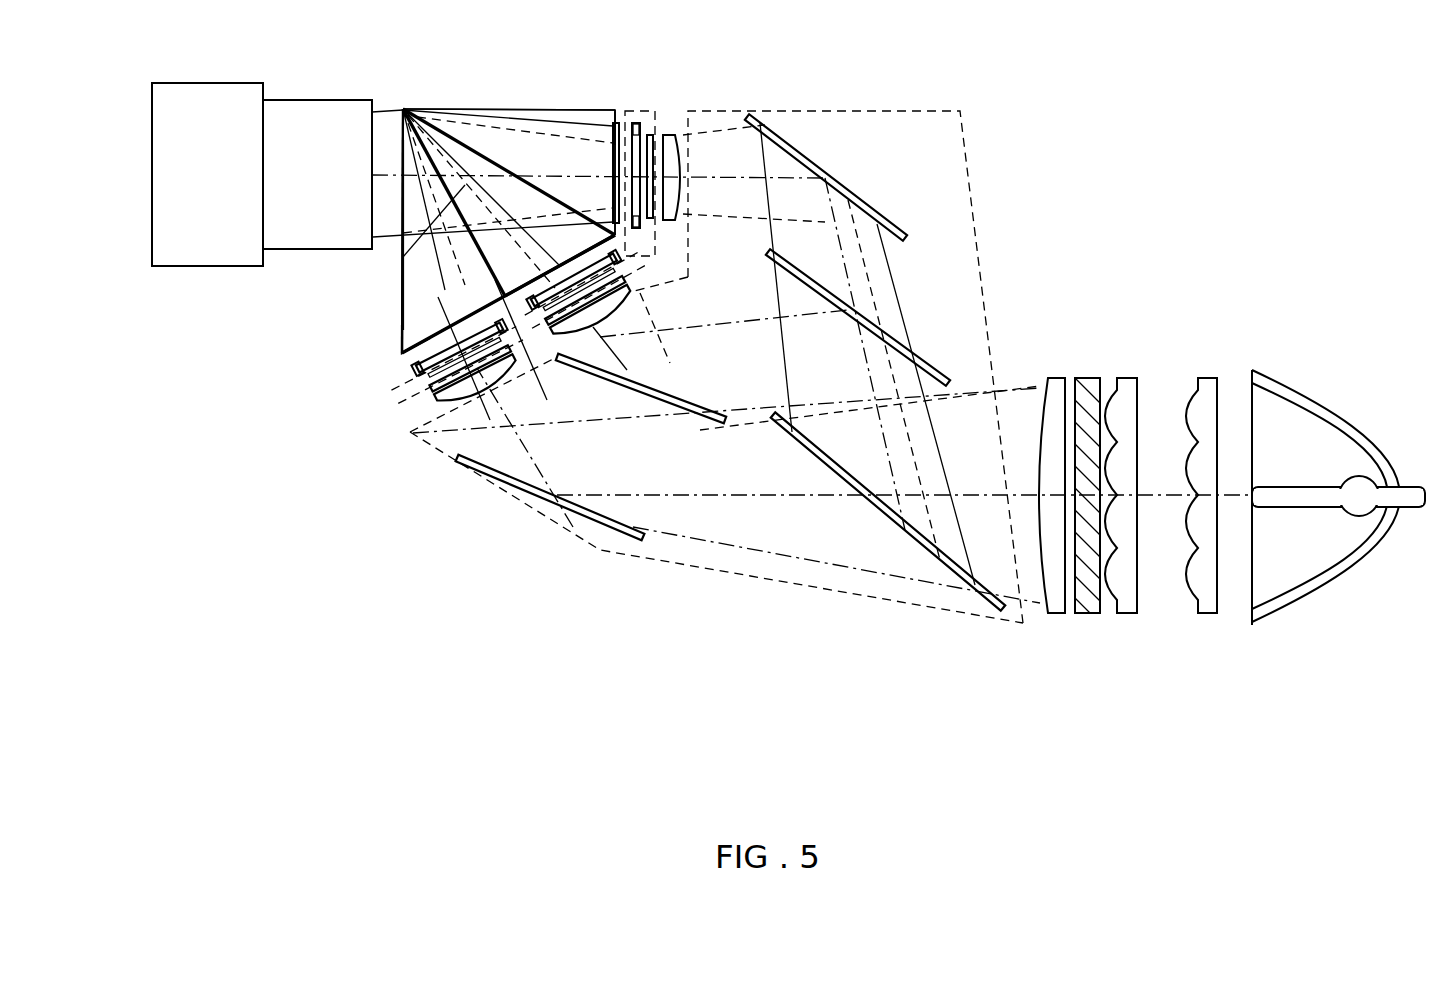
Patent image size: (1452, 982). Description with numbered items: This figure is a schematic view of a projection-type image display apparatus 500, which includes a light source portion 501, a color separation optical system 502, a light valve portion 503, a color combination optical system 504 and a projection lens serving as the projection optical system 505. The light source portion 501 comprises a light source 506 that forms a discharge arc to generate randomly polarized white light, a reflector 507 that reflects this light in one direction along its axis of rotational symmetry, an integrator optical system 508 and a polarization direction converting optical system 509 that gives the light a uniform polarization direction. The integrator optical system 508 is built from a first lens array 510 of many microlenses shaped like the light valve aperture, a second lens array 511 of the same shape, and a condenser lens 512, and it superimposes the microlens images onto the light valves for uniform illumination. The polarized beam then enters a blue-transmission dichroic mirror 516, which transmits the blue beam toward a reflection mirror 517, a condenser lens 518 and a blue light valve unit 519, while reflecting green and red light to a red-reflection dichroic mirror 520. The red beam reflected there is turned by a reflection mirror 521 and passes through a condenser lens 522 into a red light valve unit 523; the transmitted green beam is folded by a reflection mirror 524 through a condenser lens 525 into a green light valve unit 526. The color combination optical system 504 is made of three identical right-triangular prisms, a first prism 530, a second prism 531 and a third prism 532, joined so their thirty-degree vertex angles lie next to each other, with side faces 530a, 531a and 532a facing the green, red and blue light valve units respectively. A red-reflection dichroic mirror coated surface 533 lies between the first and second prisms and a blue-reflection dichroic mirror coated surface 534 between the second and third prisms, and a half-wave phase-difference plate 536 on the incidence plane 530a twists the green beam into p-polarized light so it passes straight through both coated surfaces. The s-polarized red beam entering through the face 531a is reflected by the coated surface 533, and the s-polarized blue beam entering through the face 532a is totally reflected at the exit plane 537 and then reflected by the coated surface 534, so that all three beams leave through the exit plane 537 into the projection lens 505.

The projection-type image display apparatus 500 is at (1435, 687).
The light source portion 501 is at (1230, 466).
The color separation optical system 502 is at (827, 110).
The light valve portion 503 is at (647, 110).
The color combination optical system 504 is at (509, 102).
The projection optical system (projection lens) 505 is at (337, 100).
The light source 506 is at (1350, 478).
The reflector 507 is at (1327, 410).
The integrator optical system 508 is at (1137, 428).
The polarization direction converting optical system 509 is at (1085, 378).
The first lens array 510 is at (1216, 452).
The second lens array 511 is at (1125, 378).
The condenser lens 512 is at (1048, 378).
The blue-transmission dichroic mirror (first dichroic mirror) 516 is at (930, 552).
The reflection mirror (third reflection mirror) 517 is at (580, 517).
The condenser lens 518 is at (415, 395).
The blue light valve unit (third light valve) 519 is at (406, 370).
The red-reflection dichroic mirror (second dichroic mirror) 520 is at (863, 315).
The reflection mirror (second reflection mirror) 521 is at (650, 403).
The condenser lens 522 is at (630, 288).
The red light valve unit (second light valve) 523 is at (533, 320).
The reflection mirror (first reflection mirror) 524 is at (845, 187).
The condenser lens 525 is at (673, 130).
The green light valve unit (first light valve) 526 is at (637, 123).
The first prism 530 is at (463, 117).
The side face (first incidence plane) of the first prism 530a is at (618, 124).
The second prism 531 is at (473, 162).
The side face (second incidence plane) of the second prism 531a is at (618, 242).
The third prism 532 is at (403, 302).
The side face (third incidence plane) of the third prism 532a is at (400, 357).
The red-reflection dichroic mirror coated surface (first dichroic mirror surface) 533 is at (540, 165).
The blue-reflection dichroic mirror coated surface (second dichroic mirror surface) 534 is at (403, 262).
The λ/2 phase-difference plate 536 is at (611, 127).
The exit plane 537 is at (403, 140).